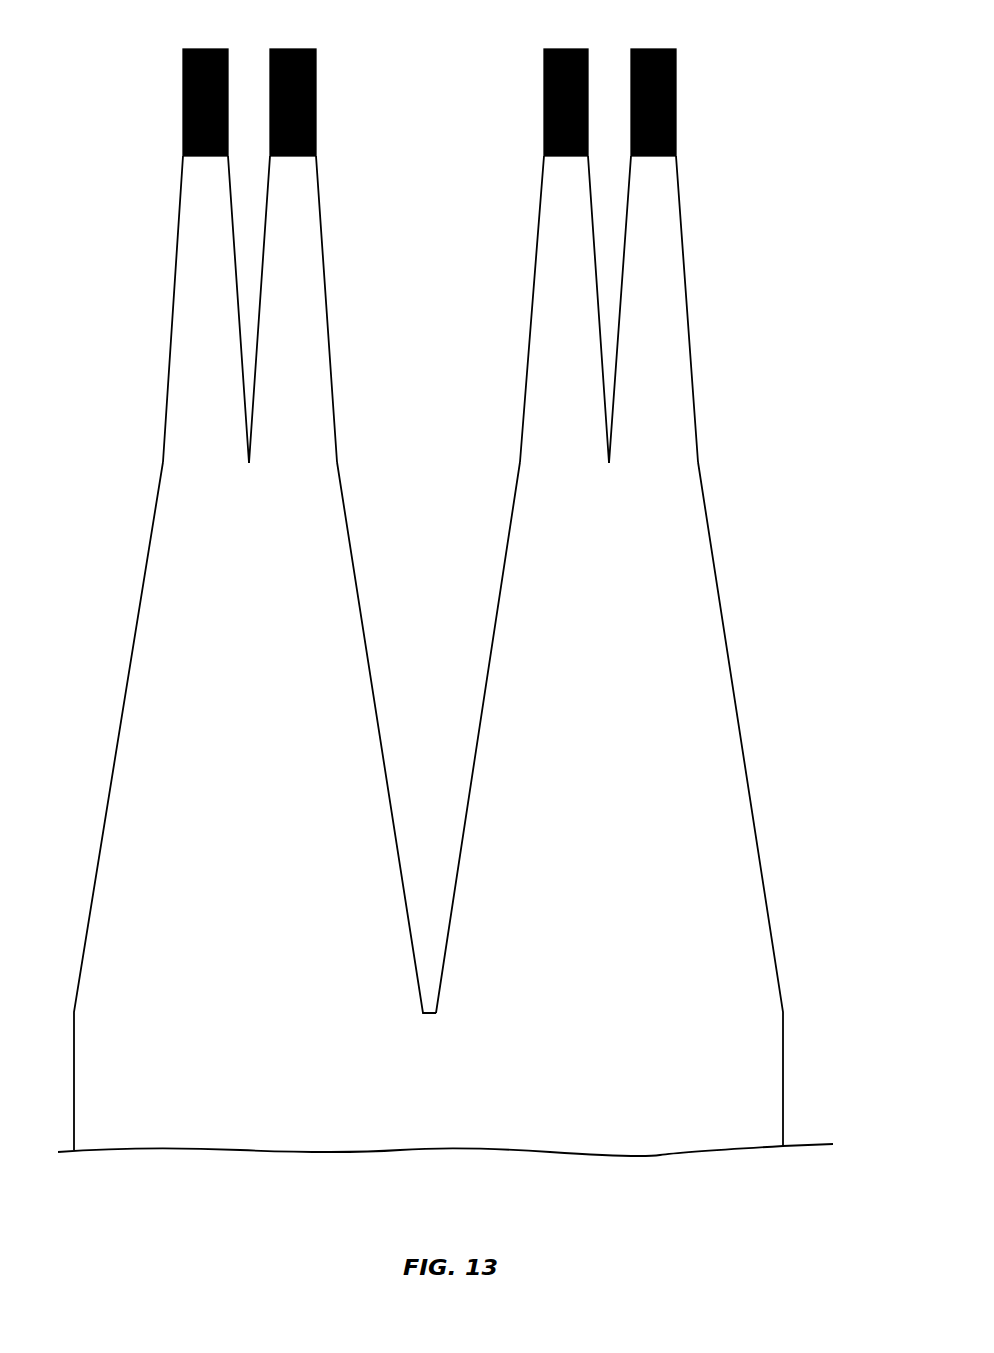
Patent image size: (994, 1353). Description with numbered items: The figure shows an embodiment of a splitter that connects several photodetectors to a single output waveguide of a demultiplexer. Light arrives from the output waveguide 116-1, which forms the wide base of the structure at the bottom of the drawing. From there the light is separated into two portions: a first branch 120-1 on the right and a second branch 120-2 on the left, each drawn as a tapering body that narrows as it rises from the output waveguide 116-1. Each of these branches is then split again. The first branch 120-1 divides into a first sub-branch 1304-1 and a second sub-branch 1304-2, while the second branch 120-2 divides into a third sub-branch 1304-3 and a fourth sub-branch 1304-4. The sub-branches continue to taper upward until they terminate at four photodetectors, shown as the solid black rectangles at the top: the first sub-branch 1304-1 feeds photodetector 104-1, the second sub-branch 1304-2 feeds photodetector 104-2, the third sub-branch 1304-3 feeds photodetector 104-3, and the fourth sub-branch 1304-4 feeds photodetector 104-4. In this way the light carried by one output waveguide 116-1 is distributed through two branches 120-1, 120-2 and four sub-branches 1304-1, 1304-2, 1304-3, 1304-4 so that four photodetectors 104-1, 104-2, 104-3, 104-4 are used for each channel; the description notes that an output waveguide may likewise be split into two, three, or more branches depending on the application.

The photodetector 104-1 is at (633, 49).
The photodetector 104-2 is at (546, 49).
The photodetector 104-3 is at (272, 49).
The photodetector 104-4 is at (184, 49).
The first sub-branch 1304-1 is at (676, 319).
The second sub-branch 1304-2 is at (543, 320).
The third sub-branch 1304-3 is at (310, 310).
The fourth sub-branch 1304-4 is at (176, 313).
The first branch 120-1 is at (717, 645).
The second branch 120-2 is at (153, 594).
The output waveguide 116-1 is at (572, 1140).